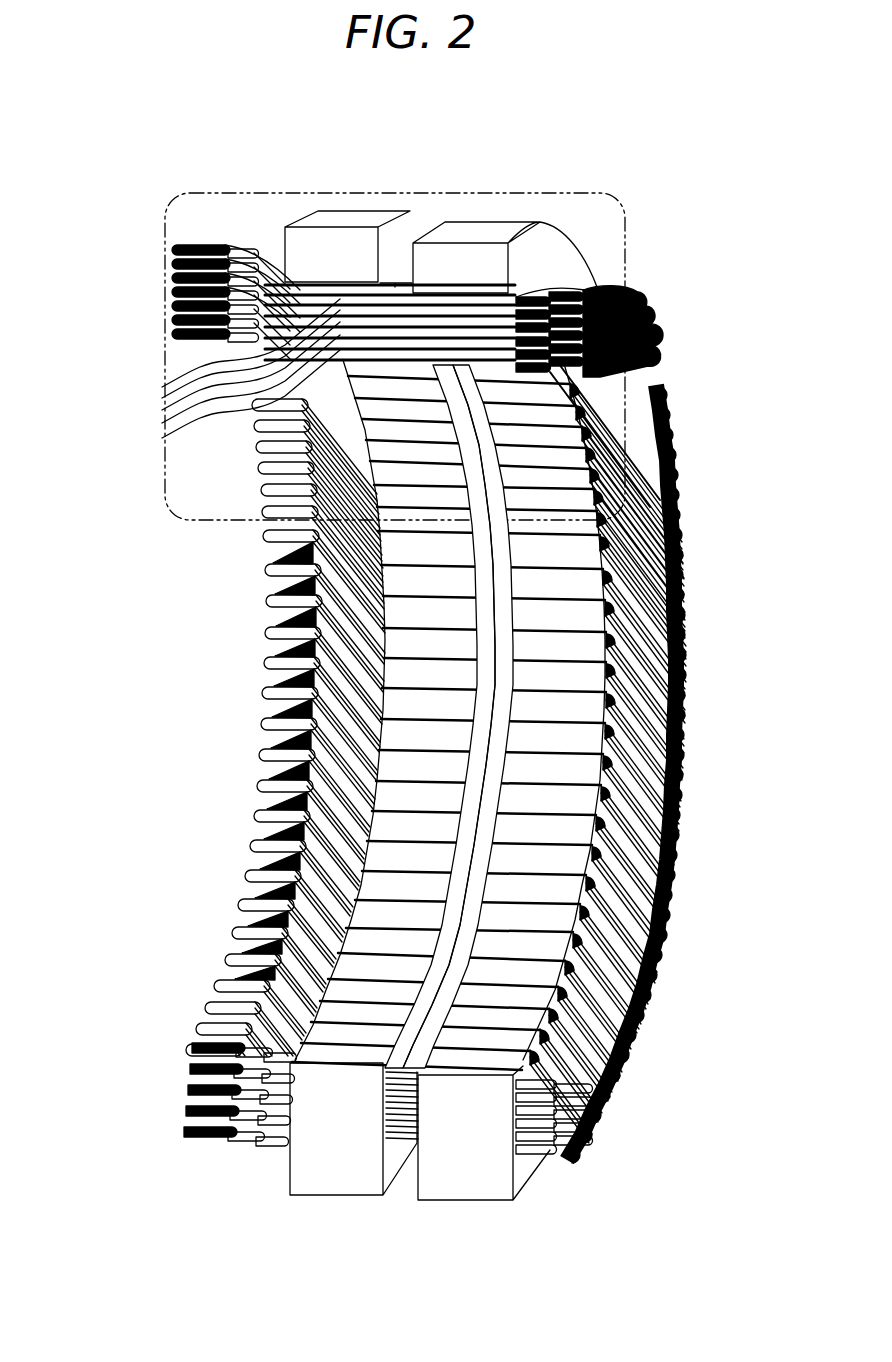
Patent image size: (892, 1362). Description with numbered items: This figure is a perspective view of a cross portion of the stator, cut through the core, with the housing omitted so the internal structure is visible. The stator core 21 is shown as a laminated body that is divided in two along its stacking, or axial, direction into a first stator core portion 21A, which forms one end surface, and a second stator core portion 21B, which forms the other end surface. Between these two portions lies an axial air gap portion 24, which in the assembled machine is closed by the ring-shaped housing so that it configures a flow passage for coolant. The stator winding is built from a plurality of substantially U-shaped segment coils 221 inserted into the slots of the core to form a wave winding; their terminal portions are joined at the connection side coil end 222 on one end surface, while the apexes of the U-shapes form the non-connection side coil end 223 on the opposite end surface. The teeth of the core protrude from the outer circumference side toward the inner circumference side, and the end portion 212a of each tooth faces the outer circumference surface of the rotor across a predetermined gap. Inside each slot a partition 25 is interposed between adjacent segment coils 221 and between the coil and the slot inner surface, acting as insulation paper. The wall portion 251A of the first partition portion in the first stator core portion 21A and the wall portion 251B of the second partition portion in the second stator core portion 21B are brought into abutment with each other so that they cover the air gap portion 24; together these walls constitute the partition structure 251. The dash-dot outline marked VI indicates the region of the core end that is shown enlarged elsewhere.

The connection side coil end 222 is at (187, 240).
The first stator core portion 21A is at (332, 247).
The second stator core portion 21B is at (462, 262).
The stator core 21 is at (396, 219).
The air gap portion 24 is at (403, 242).
The non-connection side coil end 223 is at (637, 298).
The segment coil 221 is at (647, 457).
The partition 25 is at (162, 375).
The wall portion of the second partition portion 251B is at (500, 550).
The wall portion of the first partition portion 251A is at (480, 592).
The insulating sheet 251 is at (320, 716).
The end portion of the tooth 212a is at (392, 700).
The region VI (enlarged in FIG. 6) VI is at (613, 197).